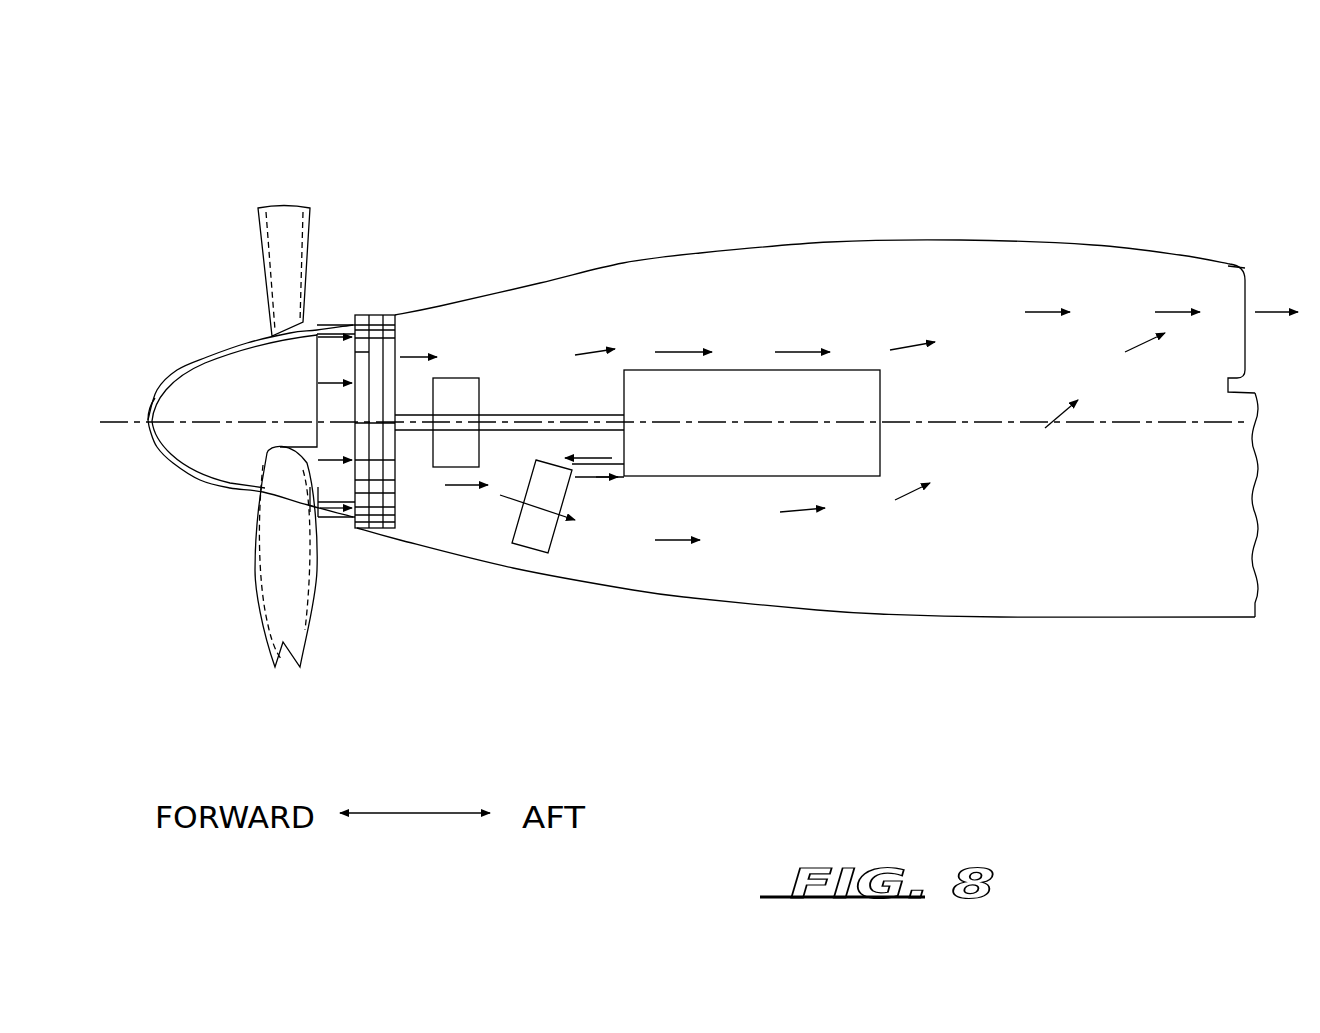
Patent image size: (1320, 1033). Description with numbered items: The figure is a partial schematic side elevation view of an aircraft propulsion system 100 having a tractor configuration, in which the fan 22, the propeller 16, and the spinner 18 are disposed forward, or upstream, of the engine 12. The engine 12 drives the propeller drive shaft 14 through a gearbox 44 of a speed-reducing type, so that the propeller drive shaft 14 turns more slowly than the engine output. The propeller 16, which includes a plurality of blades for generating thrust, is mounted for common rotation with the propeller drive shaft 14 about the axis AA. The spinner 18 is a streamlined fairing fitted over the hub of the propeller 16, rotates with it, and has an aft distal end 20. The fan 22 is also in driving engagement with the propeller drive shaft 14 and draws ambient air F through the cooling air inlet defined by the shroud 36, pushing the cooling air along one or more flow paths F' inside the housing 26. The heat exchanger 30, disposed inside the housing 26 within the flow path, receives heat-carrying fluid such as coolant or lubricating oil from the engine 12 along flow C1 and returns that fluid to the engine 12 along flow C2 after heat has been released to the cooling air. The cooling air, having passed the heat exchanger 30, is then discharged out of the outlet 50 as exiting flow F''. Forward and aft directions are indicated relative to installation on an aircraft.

The aircraft propulsion system 100 is at (838, 80).
The engine 12 is at (770, 476).
The propeller drive shaft 14 is at (415, 432).
The propeller 16 is at (270, 653).
The spinner 18 is at (215, 360).
The aft distal end 20 is at (150, 420).
The fan 22 is at (364, 482).
The shroud 36 is at (376, 528).
The housing 26 is at (623, 262).
The heat exchanger 30 is at (524, 548).
The gearbox 44 is at (457, 377).
The outlet 50 is at (1230, 265).
The axis AA is at (100, 425).
The flow of fluid carrying heat C1 is at (588, 456).
The flow of fluid returning to engine C2 is at (597, 478).
The ambient air F is at (339, 357).
The cooling air flow path F' is at (782, 531).
The exiting cooling air F'' is at (1169, 379).